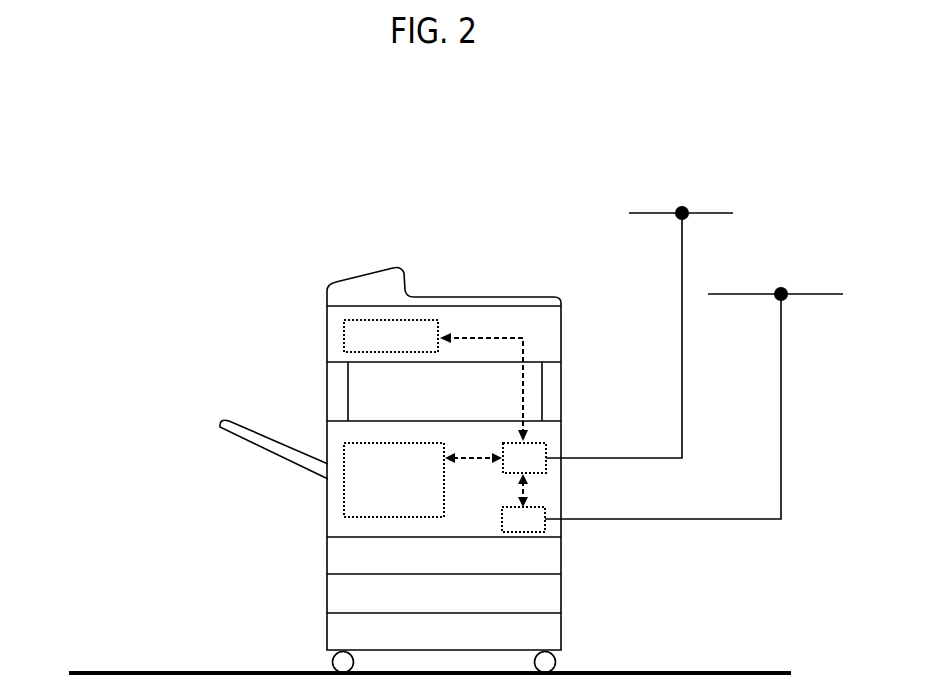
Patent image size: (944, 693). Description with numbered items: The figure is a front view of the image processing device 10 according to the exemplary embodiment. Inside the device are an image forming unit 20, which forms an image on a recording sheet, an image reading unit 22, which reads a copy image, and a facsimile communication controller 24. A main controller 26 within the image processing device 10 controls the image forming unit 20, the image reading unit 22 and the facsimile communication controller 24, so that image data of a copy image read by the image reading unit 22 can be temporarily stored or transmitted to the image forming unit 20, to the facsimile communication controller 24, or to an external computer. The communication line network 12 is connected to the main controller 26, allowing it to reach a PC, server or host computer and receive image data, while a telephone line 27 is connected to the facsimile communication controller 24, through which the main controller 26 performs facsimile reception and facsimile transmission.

The image processing device 10 is at (332, 244).
The communication line network 12 is at (658, 212).
The image forming unit 20 is at (350, 517).
The image reading unit 22 is at (344, 341).
The facsimile communication controller 24 is at (547, 532).
The main controller 26 is at (546, 447).
The telephone line 27 is at (825, 295).